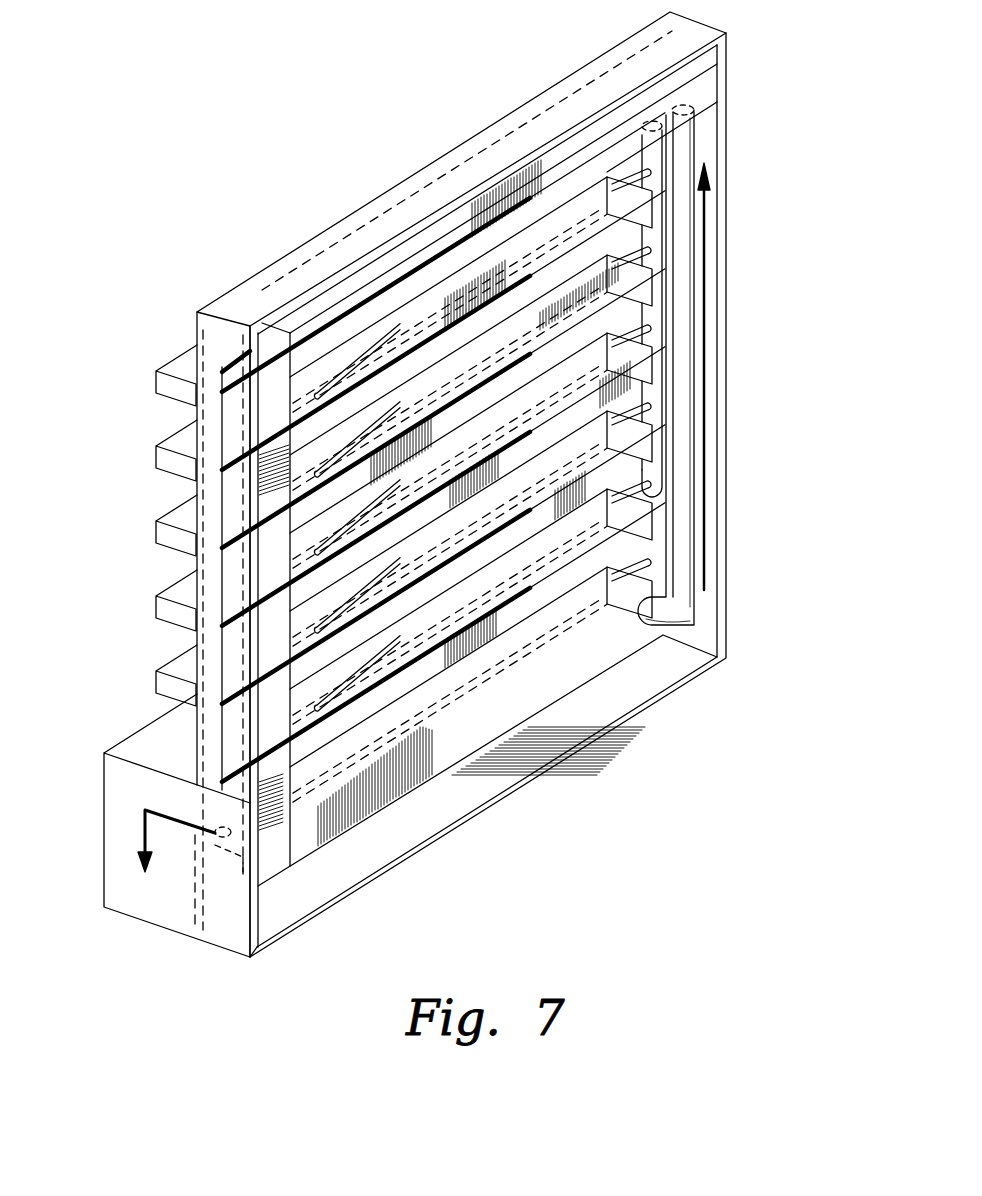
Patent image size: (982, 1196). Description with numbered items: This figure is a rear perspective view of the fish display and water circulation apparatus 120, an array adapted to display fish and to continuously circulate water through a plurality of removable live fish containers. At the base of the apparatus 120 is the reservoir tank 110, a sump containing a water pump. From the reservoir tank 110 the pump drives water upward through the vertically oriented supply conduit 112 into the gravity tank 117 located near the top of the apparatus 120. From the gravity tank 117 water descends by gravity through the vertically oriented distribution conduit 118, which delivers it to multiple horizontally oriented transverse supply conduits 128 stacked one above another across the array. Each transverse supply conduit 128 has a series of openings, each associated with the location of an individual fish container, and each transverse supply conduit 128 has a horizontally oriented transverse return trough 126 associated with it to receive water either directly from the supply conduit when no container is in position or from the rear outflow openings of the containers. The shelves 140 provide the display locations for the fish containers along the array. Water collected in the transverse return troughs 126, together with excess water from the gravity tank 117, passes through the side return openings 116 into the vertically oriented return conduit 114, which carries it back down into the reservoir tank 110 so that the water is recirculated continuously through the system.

The reservoir tank 110 is at (155, 892).
The supply conduit 112 is at (683, 380).
The return conduit 114 is at (270, 827).
The side return openings 116 is at (262, 340).
The gravity tank 117 is at (552, 188).
The distribution conduit 118 is at (652, 398).
The apparatus 120 is at (745, 198).
The transverse return trough 126 is at (555, 510).
The transverse supply conduit 128 is at (460, 378).
The shelves 140 is at (153, 529).